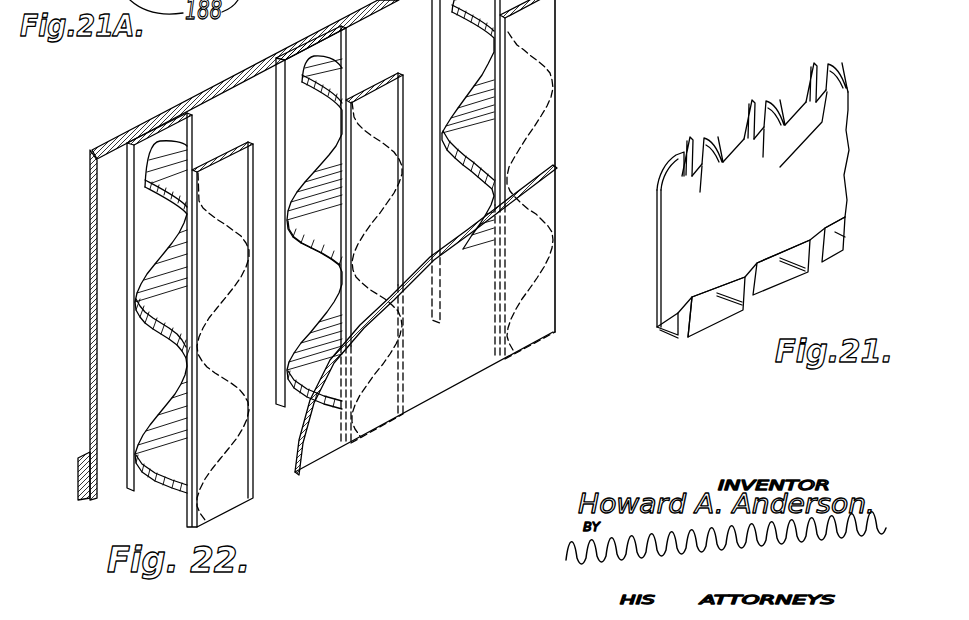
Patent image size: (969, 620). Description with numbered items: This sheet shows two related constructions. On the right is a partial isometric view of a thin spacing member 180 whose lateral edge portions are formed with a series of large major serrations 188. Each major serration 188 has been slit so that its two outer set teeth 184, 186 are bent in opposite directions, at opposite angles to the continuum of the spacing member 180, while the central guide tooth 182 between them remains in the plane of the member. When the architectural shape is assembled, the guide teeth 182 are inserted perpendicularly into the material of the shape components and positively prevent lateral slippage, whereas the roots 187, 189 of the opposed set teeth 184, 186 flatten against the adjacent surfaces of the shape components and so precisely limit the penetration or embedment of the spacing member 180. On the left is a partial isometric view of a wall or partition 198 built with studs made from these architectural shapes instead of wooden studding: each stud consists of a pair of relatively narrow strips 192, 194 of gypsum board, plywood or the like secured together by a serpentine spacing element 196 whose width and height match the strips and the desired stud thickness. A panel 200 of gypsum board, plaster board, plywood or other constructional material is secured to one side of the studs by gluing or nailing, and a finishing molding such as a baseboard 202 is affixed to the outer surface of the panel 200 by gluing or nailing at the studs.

In FIG. 21, the spacing member 180 is at (823, 167).
In FIG. 21, the guide teeth 182 is at (808, 76).
In FIG. 21, the set teeth 184 is at (792, 102).
In FIG. 21, the set teeth 186 is at (705, 163).
In FIG. 21, the root 187 is at (663, 200).
In FIG. 21, the major serration 188 is at (778, 302).
In FIG. 21, the root 189 is at (703, 170).
In FIG. 22, the strip 192 is at (235, 140).
In FIG. 22, the strip 194 is at (165, 120).
In FIG. 22, the serpentine spacing element 196 is at (150, 172).
In FIG. 22, the wall or partition 198 is at (563, 113).
In FIG. 22, the panel 200 is at (428, 380).
In FIG. 22, the baseboard 202 is at (78, 467).